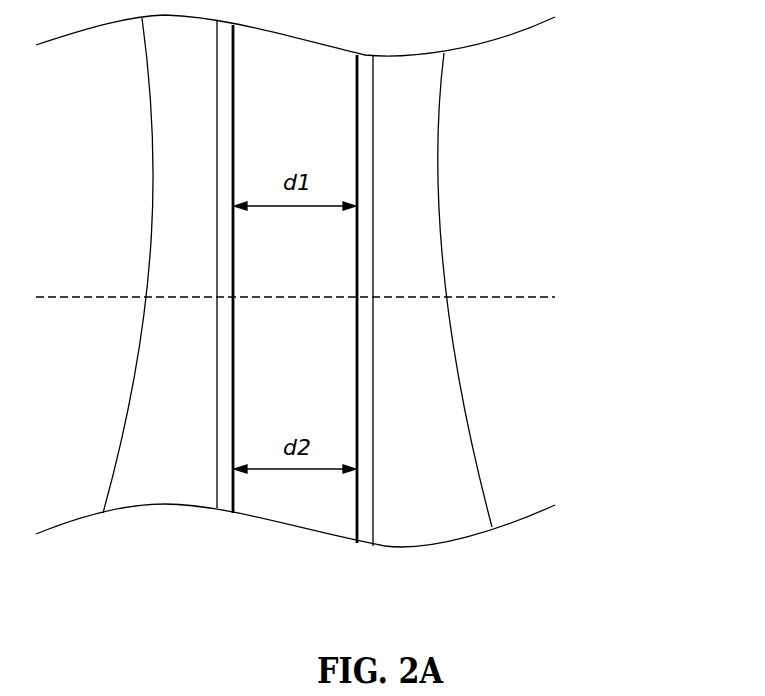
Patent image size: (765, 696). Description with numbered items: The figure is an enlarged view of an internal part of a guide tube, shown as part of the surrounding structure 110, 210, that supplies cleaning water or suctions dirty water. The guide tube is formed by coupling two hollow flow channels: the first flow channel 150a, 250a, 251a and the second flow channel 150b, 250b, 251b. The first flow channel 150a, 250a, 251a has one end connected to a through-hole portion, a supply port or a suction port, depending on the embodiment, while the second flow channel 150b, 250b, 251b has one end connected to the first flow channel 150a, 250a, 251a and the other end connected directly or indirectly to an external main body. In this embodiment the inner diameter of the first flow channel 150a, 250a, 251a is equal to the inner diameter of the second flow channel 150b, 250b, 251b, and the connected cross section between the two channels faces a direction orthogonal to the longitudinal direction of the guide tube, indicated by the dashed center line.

The body 110 is at (385, 281).
The body 210 is at (541, 62).
The first flow channel 150a is at (514, 176).
The first flow channel 250a is at (514, 176).
The first flow channel 251a is at (374, 152).
The second flow channel 150b is at (517, 421).
The second flow channel 250b is at (517, 421).
The second flow channel 251b is at (374, 405).